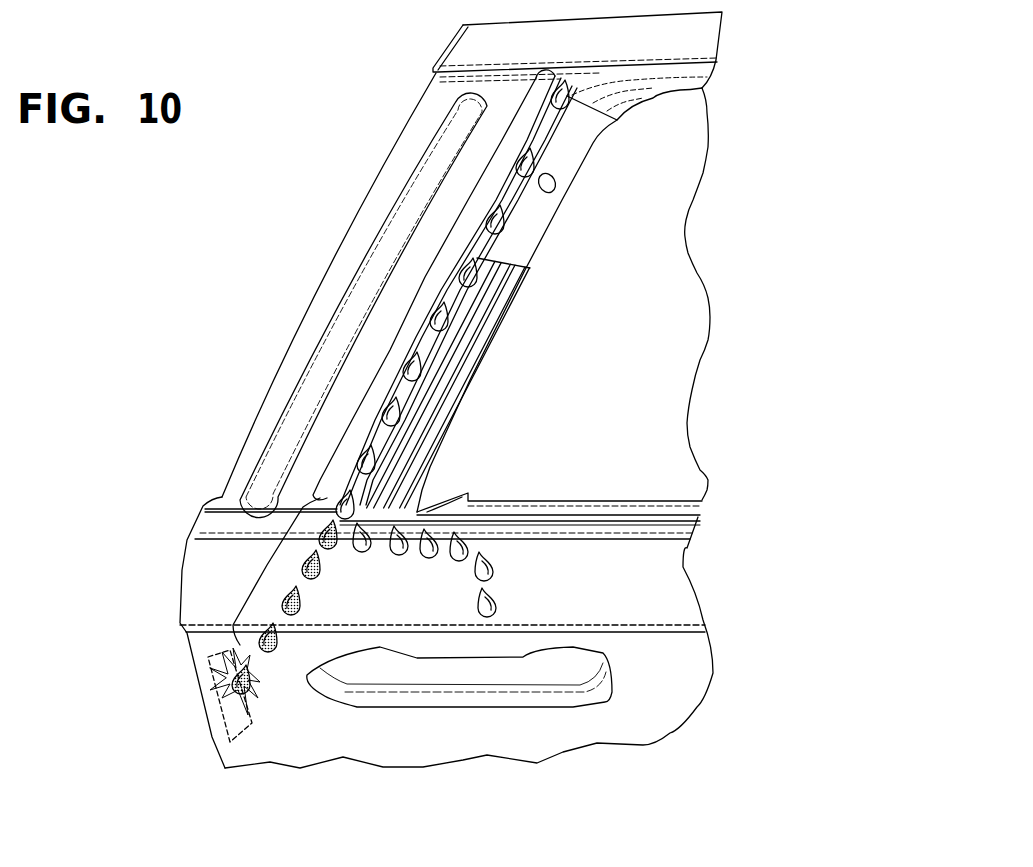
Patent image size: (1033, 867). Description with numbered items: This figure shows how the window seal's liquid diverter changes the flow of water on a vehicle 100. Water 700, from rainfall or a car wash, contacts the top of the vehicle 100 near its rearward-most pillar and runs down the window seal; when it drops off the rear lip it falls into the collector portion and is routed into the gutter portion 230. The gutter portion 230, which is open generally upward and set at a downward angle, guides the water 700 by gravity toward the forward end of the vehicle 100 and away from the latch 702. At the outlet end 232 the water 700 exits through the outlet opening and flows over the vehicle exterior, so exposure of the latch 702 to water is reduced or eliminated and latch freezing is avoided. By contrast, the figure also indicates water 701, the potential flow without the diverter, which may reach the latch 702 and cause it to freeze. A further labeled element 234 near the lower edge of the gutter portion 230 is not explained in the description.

The vehicle 100 is at (778, 89).
The gutter portion 230 is at (698, 249).
The outlet end 232 is at (677, 342).
The garnish lower edge 234 is at (700, 517).
The water 700 is at (418, 295).
The water 701 is at (266, 564).
The latch 702 is at (218, 737).